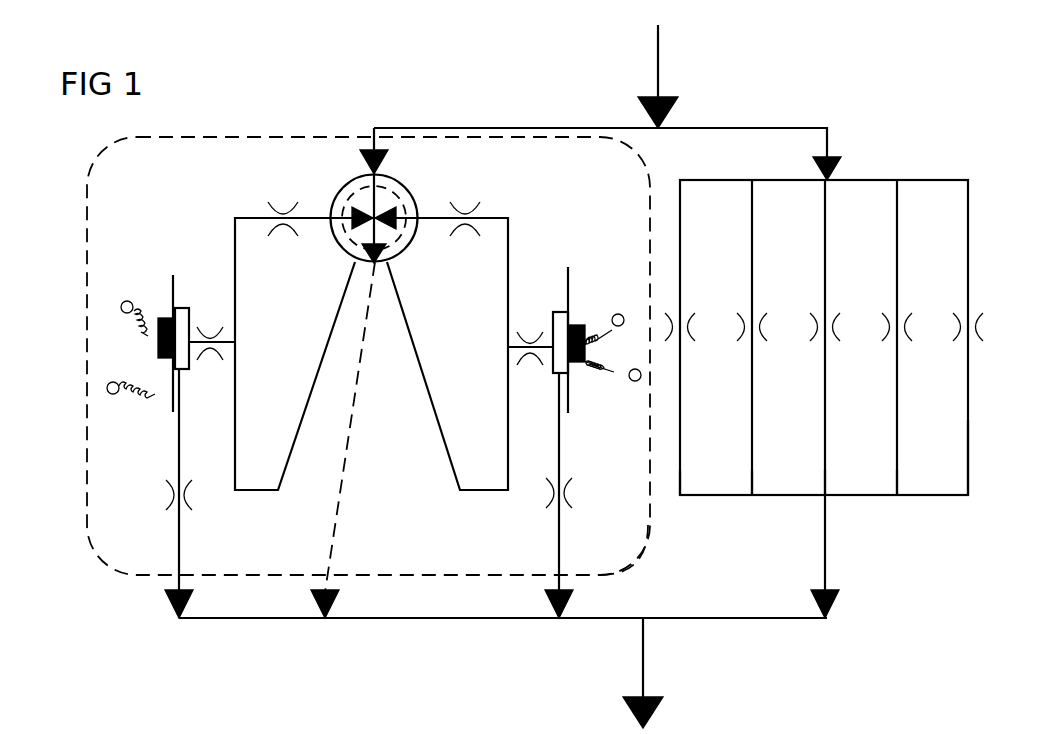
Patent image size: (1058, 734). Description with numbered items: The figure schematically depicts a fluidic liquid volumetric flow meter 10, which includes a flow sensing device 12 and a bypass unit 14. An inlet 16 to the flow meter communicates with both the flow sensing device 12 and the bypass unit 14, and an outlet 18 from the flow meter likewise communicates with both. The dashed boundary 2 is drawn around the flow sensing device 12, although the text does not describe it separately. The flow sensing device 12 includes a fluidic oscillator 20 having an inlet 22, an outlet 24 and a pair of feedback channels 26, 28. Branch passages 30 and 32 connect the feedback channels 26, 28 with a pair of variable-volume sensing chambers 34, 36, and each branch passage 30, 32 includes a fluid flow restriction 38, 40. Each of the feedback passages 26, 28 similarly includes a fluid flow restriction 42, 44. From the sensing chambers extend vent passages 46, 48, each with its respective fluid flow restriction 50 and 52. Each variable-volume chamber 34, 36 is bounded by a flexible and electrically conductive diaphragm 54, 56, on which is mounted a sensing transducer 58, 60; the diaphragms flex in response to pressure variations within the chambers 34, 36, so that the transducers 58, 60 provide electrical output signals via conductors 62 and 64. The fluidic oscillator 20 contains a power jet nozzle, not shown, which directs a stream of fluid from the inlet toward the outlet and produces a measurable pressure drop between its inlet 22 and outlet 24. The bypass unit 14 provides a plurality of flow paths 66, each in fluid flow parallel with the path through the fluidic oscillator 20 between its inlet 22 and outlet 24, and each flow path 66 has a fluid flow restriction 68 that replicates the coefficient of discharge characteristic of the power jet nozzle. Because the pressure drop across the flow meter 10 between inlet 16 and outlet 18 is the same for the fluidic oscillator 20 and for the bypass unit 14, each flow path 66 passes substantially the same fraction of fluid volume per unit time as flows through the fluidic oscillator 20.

The valve block 2 is at (178, 135).
The fluidic liquid volumetric flow meter 10 is at (802, 96).
The flow sensing device 12 is at (630, 560).
The bypass unit 14 is at (890, 530).
The inlet 16 is at (658, 58).
The outlet 18 is at (643, 648).
The fluidic oscillator 20 is at (516, 208).
The inlet 22 is at (376, 148).
The outlet 24 is at (327, 523).
The feedback channel 26 is at (445, 456).
The feedback channel 28 is at (293, 440).
The branch passage 30 is at (512, 330).
The branch passage 32 is at (230, 328).
The variable-volume sensing chamber 34 is at (568, 372).
The variable-volume sensing chamber 36 is at (184, 308).
The fluid flow restriction 38 is at (530, 362).
The fluid flow restriction 40 is at (210, 360).
The fluid flow restriction 42 is at (465, 234).
The fluid flow restriction 44 is at (283, 234).
The vent passage 46 is at (560, 455).
The vent passage 48 is at (178, 458).
The fluid flow restriction 50 is at (570, 494).
The fluid flow restriction 52 is at (190, 496).
The diaphragm 54 is at (576, 298).
The diaphragm 56 is at (172, 318).
The sensing transducer 58 is at (585, 360).
The sensing transducer 60 is at (158, 346).
The conductor 62 is at (623, 313).
The conductor 64 is at (124, 302).
The flow path 66 is at (681, 478).
The fluid flow restriction 68 is at (690, 330).